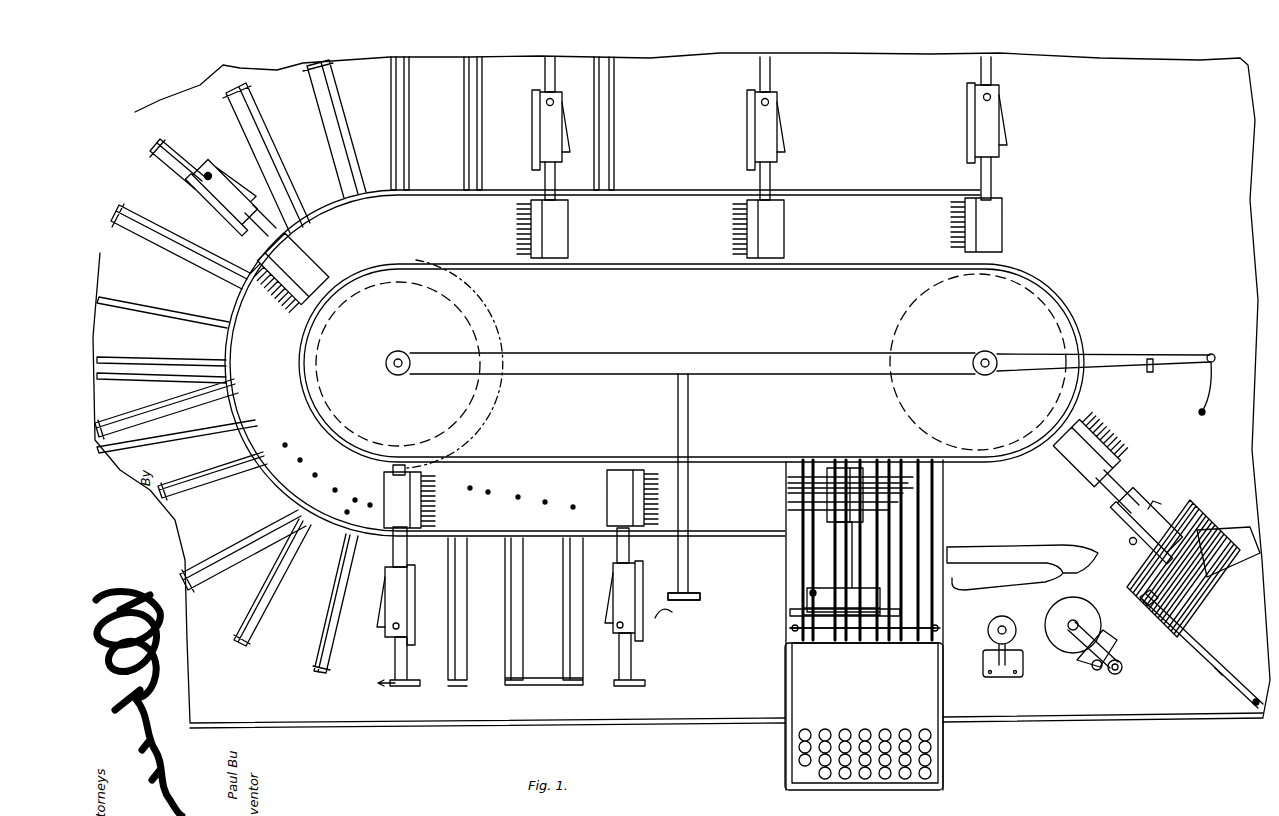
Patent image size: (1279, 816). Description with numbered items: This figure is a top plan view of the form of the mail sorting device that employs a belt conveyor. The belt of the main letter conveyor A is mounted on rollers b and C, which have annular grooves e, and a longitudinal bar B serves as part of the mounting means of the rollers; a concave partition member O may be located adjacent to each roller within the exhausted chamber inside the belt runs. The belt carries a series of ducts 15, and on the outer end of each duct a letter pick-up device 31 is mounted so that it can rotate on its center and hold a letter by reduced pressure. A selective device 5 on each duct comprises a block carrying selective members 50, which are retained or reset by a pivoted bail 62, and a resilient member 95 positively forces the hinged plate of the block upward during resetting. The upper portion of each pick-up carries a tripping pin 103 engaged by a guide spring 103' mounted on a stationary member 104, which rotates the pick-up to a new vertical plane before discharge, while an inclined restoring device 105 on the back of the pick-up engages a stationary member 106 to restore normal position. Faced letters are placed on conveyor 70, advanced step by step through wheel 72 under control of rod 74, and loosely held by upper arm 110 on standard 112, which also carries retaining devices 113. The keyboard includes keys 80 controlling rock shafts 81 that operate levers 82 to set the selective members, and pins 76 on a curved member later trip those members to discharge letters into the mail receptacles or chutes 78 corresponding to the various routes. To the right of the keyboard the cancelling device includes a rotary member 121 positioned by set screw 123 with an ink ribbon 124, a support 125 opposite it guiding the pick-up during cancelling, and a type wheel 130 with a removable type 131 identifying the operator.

The selective device 5 is at (560, 225).
The duct 15 is at (275, 450).
The letter pick-up device 31 is at (980, 140).
The selective member 50 is at (640, 519).
The pivoted bail 62 is at (628, 470).
The conveyor 70 is at (1208, 630).
The wheel 72 is at (1248, 700).
The rod 74 is at (1215, 665).
The pins 76 is at (545, 502).
The mail receptacles or chutes 78 is at (190, 172).
The keys 80 is at (905, 735).
The rock shafts 81 is at (910, 497).
The levers 82 is at (812, 470).
The resilient member 95 is at (1150, 372).
The tripping pin 103 is at (765, 362).
The guide spring 103' is at (679, 618).
The stationary member 104 is at (688, 568).
The restoring device 105 is at (1002, 138).
The stationary member 106 is at (1208, 372).
The upper arm 110 is at (1183, 558).
The standard 112 is at (1230, 527).
The retaining devices 113 is at (1142, 608).
The rotary member 121 is at (1088, 614).
The set screw 123 is at (1122, 668).
The ink ribbon 124 is at (1090, 667).
The support 125 is at (1078, 562).
The type wheel 130 is at (990, 624).
The removable type 131 is at (1012, 620).
The belt of the main letter conveyor A is at (303, 347).
The longitudinal bar B is at (418, 372).
The roller C is at (978, 362).
The concave partition member O is at (492, 405).
The roller b is at (398, 364).
The annular grooves e is at (515, 612).